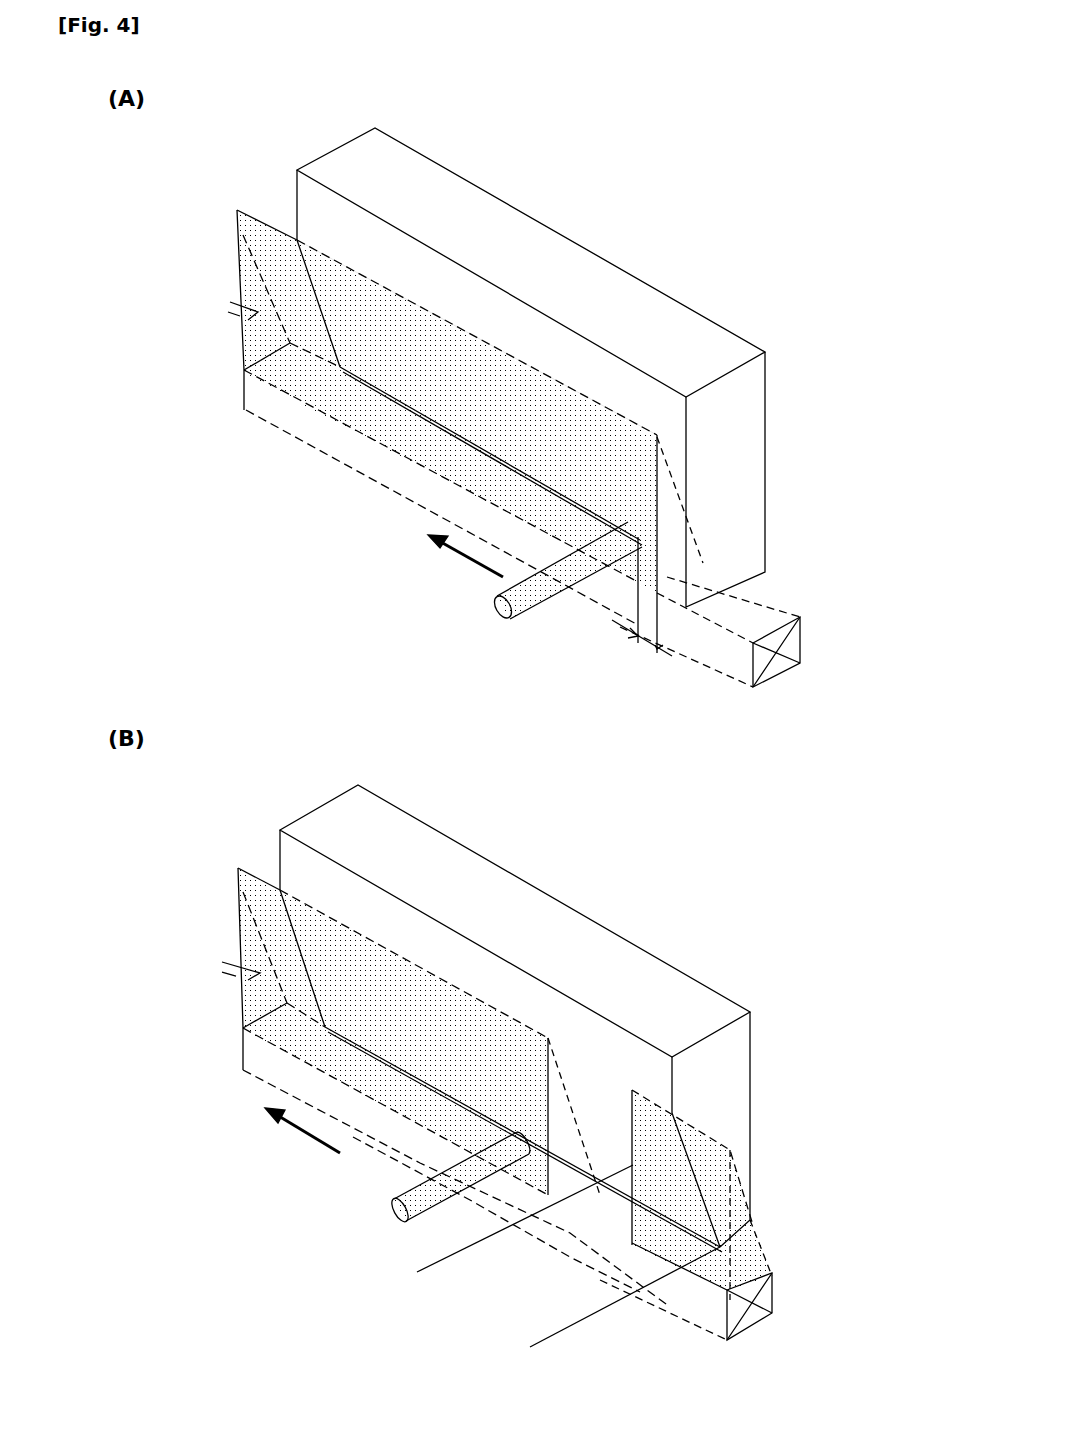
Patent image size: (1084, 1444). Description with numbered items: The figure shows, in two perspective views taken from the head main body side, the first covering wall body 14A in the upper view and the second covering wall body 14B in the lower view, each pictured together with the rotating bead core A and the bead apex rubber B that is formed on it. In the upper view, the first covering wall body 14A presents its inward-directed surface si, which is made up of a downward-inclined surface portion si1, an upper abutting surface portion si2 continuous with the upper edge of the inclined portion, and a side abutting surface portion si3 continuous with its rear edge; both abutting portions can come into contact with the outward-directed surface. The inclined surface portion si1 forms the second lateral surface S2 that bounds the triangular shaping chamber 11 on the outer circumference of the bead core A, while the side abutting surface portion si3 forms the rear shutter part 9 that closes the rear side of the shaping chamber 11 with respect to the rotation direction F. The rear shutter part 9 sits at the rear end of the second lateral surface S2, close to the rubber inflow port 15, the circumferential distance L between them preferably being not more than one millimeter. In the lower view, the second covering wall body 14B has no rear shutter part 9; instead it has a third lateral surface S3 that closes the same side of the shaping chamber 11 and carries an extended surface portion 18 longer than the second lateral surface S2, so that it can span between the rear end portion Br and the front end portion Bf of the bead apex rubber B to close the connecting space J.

The first covering wall body 14A is at (705, 318).
The second covering wall body 14B is at (690, 967).
The bead apex rubber B is at (240, 262).
The inward-directed surface si is at (325, 221).
The inclined surface portion si1 is at (522, 301).
The second lateral surface S2 is at (577, 435).
The upper abutting surface portion si2 is at (430, 283).
The side abutting surface portion si3 is at (700, 584).
The rear shutter part 9 is at (668, 597).
The third lateral surface S3 is at (442, 1030).
The shaping chamber 11 is at (390, 415).
The rubber inflow port 15 is at (598, 580).
The rotation direction F is at (468, 560).
The distance L is at (645, 642).
The bead core A is at (780, 677).
The rear end portion Br is at (560, 1085).
The front end portion Bf is at (633, 1168).
The connecting space J is at (550, 1290).
The extended surface portion 18 is at (543, 1343).